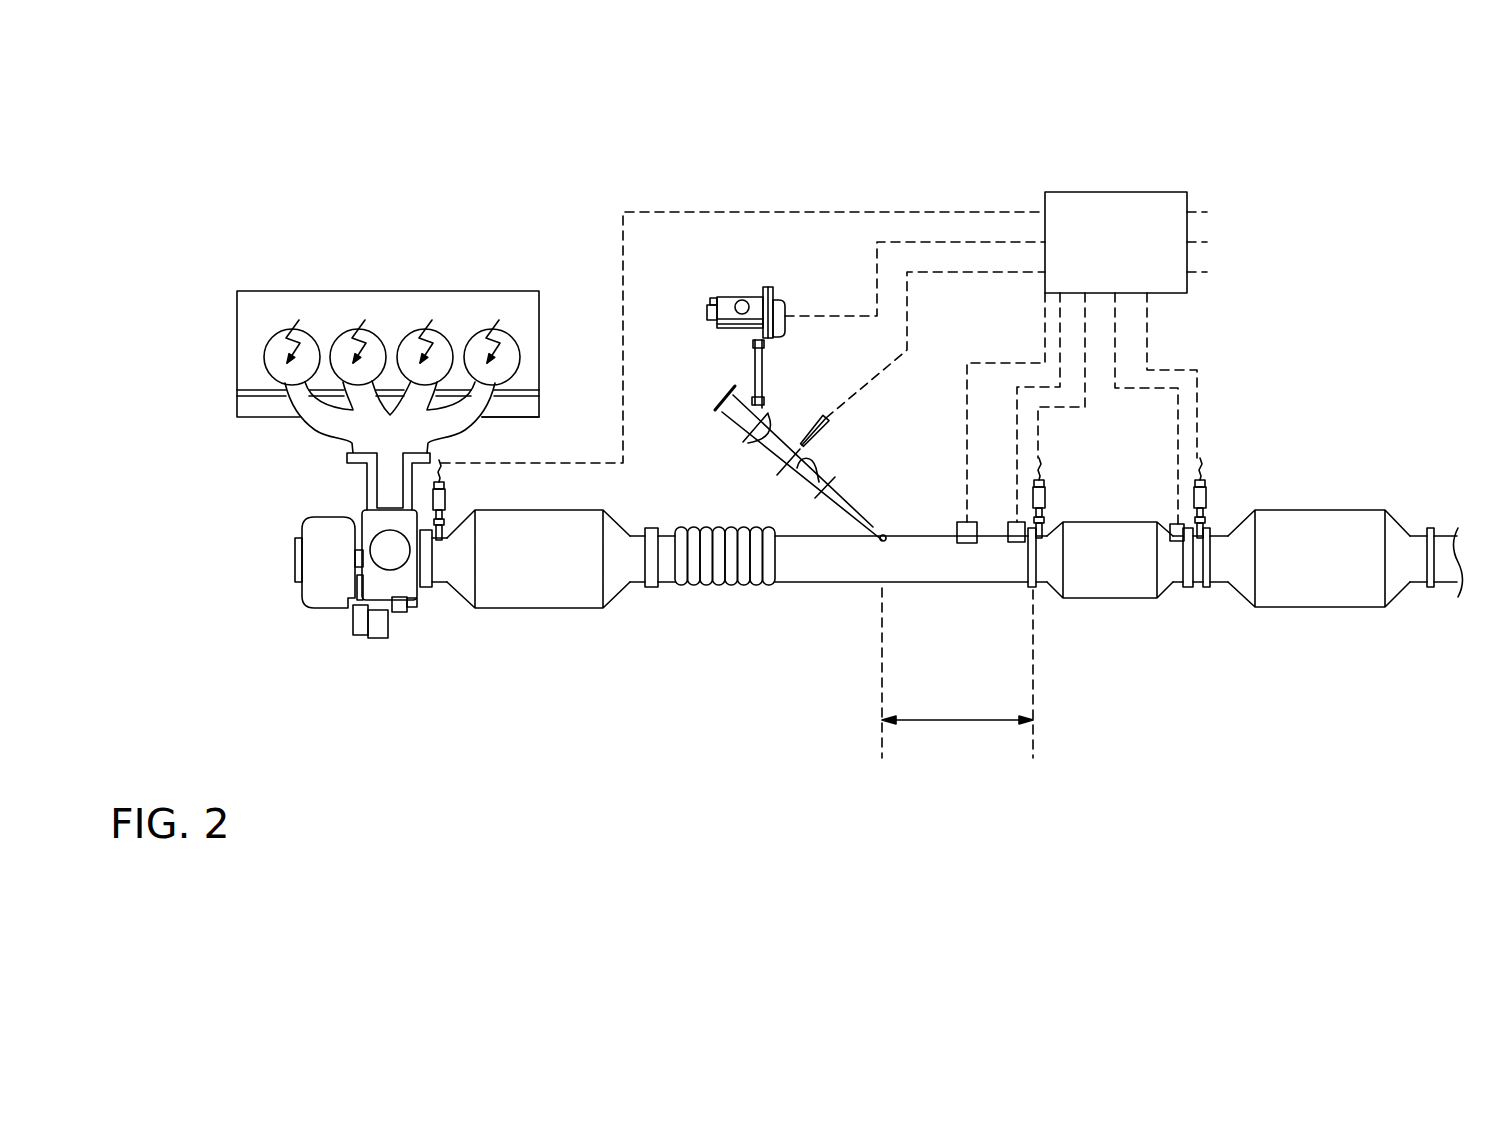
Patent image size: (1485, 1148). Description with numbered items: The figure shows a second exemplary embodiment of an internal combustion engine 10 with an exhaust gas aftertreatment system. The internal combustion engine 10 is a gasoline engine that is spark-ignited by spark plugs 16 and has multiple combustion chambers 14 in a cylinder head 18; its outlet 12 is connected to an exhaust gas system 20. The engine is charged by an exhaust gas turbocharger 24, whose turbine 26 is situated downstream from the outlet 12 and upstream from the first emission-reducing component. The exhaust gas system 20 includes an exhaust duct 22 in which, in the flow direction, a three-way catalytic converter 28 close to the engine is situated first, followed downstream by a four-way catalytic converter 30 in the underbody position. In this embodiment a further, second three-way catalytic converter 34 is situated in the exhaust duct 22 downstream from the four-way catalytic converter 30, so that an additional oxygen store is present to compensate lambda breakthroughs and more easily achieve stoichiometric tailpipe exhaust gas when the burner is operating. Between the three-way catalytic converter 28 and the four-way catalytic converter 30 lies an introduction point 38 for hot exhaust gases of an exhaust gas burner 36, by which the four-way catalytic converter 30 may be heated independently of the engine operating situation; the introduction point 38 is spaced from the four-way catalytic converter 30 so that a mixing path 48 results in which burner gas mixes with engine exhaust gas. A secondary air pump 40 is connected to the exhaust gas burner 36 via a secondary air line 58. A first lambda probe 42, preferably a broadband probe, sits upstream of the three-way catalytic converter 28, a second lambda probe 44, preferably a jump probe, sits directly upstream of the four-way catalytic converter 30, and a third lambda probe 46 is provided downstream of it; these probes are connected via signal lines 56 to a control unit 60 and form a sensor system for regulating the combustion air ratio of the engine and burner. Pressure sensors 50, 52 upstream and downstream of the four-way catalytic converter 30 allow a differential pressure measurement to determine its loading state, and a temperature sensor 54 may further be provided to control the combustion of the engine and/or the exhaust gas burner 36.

The internal combustion engine 10 is at (268, 288).
The outlet 12 is at (379, 434).
The combustion chamber 14 is at (274, 360).
The spark plug 16 is at (425, 333).
The cylinder head 18 is at (501, 412).
The exhaust gas system 20 is at (1322, 393).
The exhaust duct 22 is at (804, 574).
The exhaust gas turbocharger 24 is at (340, 622).
The turbine 26 is at (400, 614).
The three-way catalytic converter close to the engine 28 is at (538, 594).
The four-way catalytic converter 30 is at (1102, 594).
The second three-way catalytic converter 34 is at (1330, 594).
The exhaust gas burner 36 is at (795, 455).
The introduction point 38 is at (883, 534).
The secondary air pump 40 is at (753, 293).
The first lambda probe 42 is at (446, 499).
The second lambda probe 44 is at (1045, 504).
The third lambda probe 46 is at (1207, 502).
The mixing path 48 is at (957, 673).
The first pressure sensor 50 is at (1010, 520).
The second pressure sensor 52 is at (1170, 521).
The temperature sensor 54 is at (956, 519).
The signal line 56 is at (1203, 383).
The secondary air line 58 is at (765, 371).
The control unit 60 is at (1184, 197).